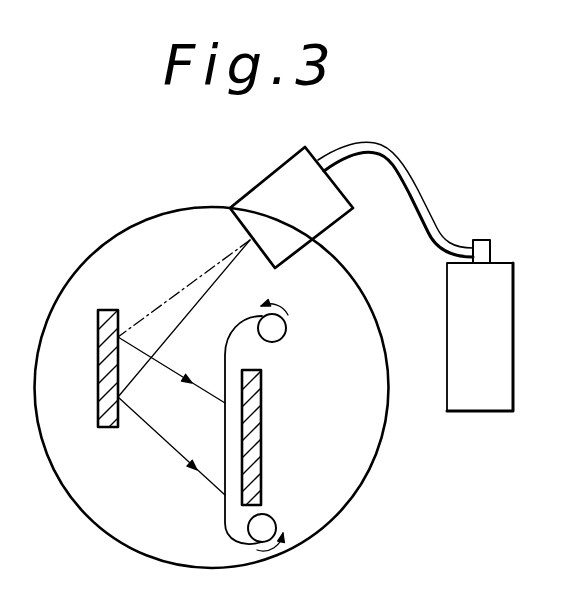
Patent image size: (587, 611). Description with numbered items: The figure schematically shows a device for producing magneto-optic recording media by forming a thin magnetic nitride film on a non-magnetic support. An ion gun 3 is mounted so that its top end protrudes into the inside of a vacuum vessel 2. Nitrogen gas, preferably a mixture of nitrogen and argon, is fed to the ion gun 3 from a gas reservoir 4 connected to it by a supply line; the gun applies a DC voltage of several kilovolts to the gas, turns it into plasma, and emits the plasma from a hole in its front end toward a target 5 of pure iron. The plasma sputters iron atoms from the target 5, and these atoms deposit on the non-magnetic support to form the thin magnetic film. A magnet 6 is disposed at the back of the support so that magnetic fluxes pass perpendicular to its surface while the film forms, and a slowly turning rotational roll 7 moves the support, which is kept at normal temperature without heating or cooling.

The vacuum vessel 2 is at (117, 233).
The ion gun 3 is at (267, 185).
The gas reservoir 4 is at (513, 329).
The target 5 is at (102, 393).
The magnet 6 is at (262, 437).
The rotational roll 7 is at (278, 333).